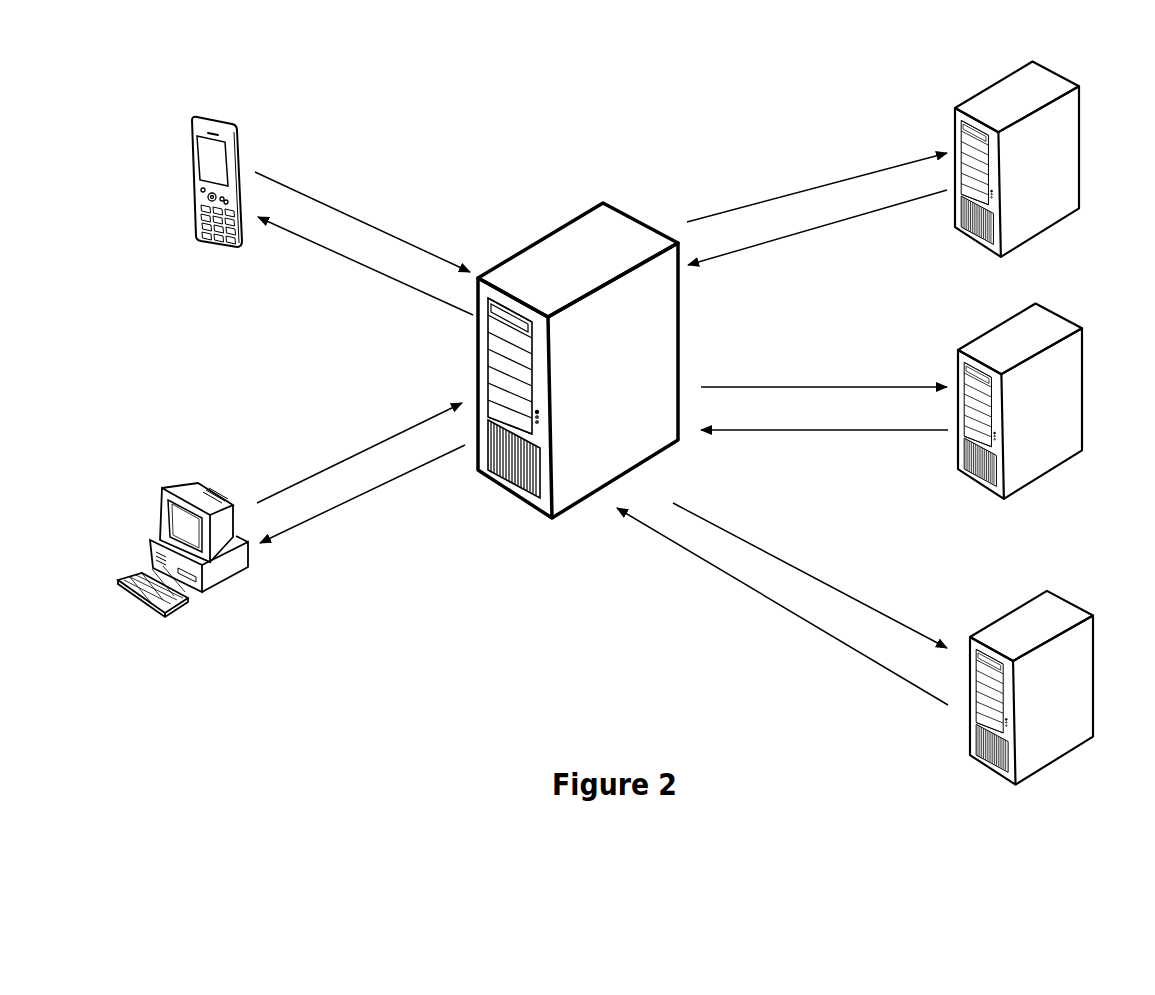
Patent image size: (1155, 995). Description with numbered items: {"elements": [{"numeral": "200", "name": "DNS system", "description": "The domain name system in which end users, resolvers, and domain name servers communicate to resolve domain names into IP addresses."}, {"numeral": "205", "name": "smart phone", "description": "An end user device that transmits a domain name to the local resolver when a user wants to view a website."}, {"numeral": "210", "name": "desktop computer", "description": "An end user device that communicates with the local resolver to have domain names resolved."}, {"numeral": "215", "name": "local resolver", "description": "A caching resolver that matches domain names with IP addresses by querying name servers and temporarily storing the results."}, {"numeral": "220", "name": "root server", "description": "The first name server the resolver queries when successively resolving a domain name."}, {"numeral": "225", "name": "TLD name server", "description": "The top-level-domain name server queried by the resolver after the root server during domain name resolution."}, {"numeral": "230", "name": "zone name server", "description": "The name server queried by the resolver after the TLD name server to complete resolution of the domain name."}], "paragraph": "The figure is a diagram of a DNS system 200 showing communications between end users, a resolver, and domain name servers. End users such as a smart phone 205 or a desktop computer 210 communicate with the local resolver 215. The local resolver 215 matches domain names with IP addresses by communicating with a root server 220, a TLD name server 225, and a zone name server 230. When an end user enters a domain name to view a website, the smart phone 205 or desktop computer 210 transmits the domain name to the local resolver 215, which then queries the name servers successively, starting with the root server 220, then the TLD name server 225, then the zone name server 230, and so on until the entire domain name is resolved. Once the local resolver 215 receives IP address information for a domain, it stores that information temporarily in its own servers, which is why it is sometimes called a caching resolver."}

The DNS resolution system 200 is at (529, 92).
The mobile phone client 205 is at (223, 117).
The desktop computer client 210 is at (217, 490).
The DNS resolver server 215 is at (515, 230).
The root server 220 is at (1100, 228).
The TLD server 225 is at (1100, 475).
The zone name server 230 is at (1115, 763).